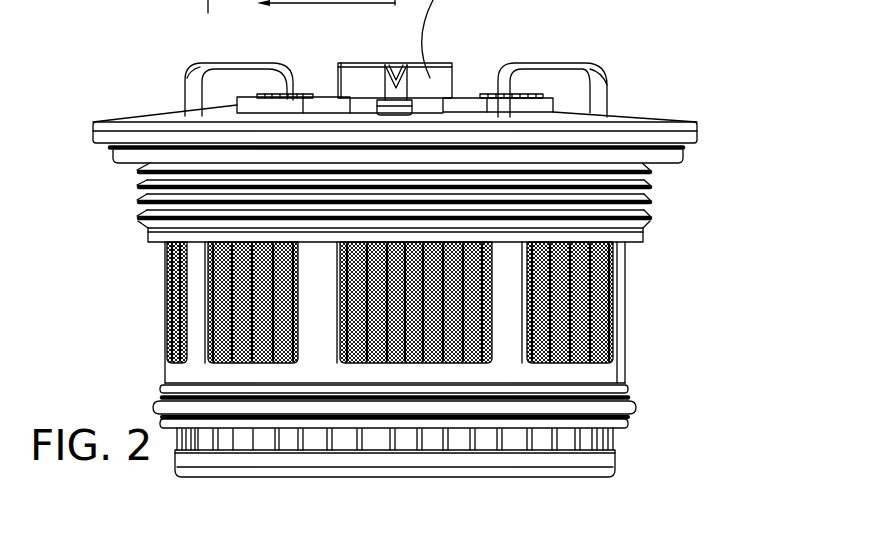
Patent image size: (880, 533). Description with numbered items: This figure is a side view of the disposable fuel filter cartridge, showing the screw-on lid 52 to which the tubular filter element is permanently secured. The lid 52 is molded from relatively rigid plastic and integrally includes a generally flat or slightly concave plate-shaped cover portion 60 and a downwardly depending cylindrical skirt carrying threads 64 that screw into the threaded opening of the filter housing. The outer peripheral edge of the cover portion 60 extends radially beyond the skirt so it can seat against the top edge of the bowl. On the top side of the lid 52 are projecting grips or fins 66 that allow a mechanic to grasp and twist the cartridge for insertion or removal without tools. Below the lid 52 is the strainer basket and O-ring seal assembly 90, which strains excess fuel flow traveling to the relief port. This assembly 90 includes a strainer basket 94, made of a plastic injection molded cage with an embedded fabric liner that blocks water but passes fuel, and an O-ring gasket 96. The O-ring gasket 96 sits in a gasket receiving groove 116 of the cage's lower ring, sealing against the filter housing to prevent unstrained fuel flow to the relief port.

The lid 52 is at (650, 104).
The cover portion 60 is at (684, 140).
The threads 64 is at (647, 183).
The grips or fins 66 is at (575, 92).
The strainer basket 94 is at (633, 310).
The strainer basket and O-ring seal assembly 90 is at (651, 386).
The O-ring gasket 96 is at (622, 408).
The gasket receiving groove 116 is at (629, 418).